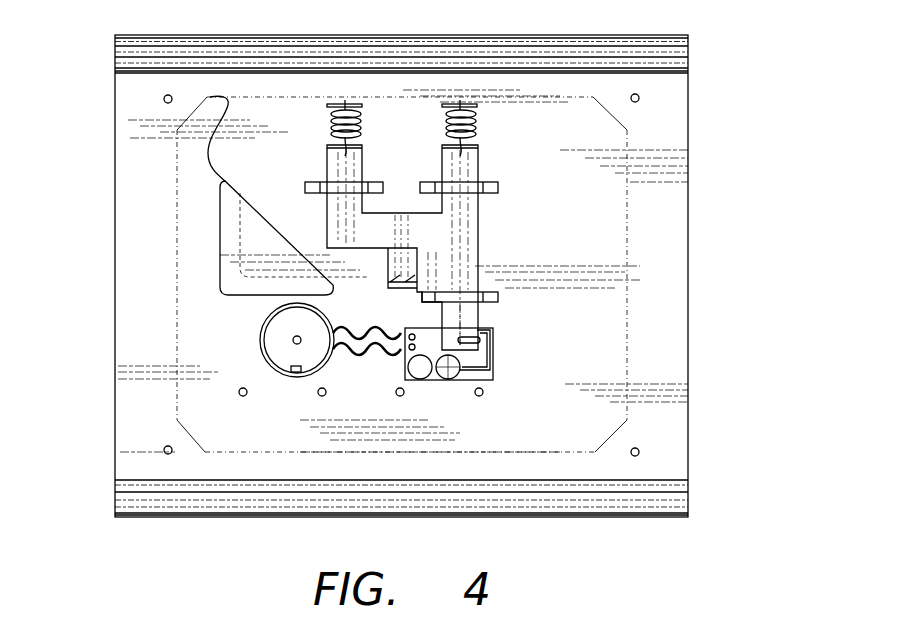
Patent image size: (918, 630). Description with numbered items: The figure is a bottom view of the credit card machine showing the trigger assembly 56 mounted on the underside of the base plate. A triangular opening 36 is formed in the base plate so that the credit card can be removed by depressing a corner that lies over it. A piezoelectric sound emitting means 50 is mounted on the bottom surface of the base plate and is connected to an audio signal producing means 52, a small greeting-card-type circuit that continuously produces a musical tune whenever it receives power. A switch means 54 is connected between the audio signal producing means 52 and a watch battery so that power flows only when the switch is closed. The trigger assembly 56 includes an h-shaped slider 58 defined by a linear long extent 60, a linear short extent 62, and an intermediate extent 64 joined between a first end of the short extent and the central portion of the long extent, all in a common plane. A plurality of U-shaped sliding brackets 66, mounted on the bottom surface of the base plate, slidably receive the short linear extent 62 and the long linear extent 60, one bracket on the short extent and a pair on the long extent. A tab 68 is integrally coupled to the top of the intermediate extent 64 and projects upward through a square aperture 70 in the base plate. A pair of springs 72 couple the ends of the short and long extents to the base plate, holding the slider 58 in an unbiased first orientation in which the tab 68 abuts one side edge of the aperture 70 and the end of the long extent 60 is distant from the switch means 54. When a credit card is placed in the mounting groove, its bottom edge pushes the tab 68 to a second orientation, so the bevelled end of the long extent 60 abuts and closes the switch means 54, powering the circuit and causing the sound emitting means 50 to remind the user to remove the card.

The triangular opening 36 is at (240, 280).
The piezoelectric sound emitting means 50 is at (164, 448).
The audio signal producing means 52 is at (493, 373).
The switch means 54 is at (470, 338).
The trigger assembly 56 is at (528, 215).
The slider 58 is at (478, 250).
The linear long extent 60 is at (463, 230).
The linear short extent 62 is at (210, 97).
The intermediate extent 64 is at (400, 237).
The U-shaped sliding brackets 66 is at (500, 178).
The tab 68 is at (388, 288).
The square aperture 70 is at (400, 292).
The springs 72 is at (333, 127).